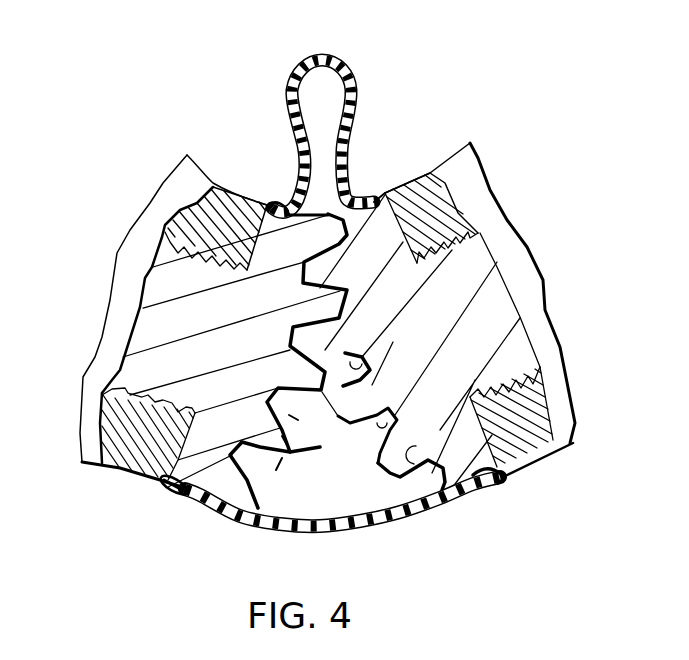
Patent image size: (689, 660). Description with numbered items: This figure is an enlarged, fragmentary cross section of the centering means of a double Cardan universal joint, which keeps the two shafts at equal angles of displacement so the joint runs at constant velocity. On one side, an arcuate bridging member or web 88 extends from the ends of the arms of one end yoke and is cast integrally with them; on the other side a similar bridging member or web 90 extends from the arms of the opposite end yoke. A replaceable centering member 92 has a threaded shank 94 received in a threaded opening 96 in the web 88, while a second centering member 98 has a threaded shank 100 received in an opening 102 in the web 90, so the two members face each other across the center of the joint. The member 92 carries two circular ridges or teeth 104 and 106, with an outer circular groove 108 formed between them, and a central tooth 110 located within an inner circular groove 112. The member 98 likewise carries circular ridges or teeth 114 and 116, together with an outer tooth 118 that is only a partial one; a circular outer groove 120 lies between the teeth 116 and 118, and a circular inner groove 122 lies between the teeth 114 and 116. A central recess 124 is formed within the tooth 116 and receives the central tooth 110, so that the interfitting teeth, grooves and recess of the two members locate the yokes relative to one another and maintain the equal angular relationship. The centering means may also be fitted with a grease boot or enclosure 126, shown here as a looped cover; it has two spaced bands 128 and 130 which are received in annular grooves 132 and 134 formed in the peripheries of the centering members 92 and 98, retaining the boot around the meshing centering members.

The arcuate bridging member or web 88 is at (228, 187).
The bridging member or web 90 is at (432, 170).
The replaceable centering member 92 is at (252, 493).
The threaded shank 94 is at (203, 252).
The threaded opening 96 is at (133, 387).
The centering member 98 is at (408, 484).
The threaded shank 100 is at (542, 372).
The opening 102 is at (453, 259).
The circular ridge or tooth 104 is at (240, 517).
The circular ridge or tooth 106 is at (276, 470).
The outer circular groove 108 is at (259, 510).
The central tooth 110 is at (298, 420).
The inner circular groove 112 is at (287, 445).
The circular ridge or tooth 114 is at (398, 420).
The circular ridge or tooth 116 is at (346, 337).
The outer tooth 118 is at (462, 500).
The circular outer groove 120 is at (420, 447).
The circular inner groove 122 is at (380, 410).
The central recess 124 is at (366, 357).
The grease boot or enclosure 126 is at (364, 86).
The band 128 is at (273, 201).
The band 130 is at (364, 196).
The annular groove 132 is at (174, 488).
The annular groove 134 is at (505, 479).